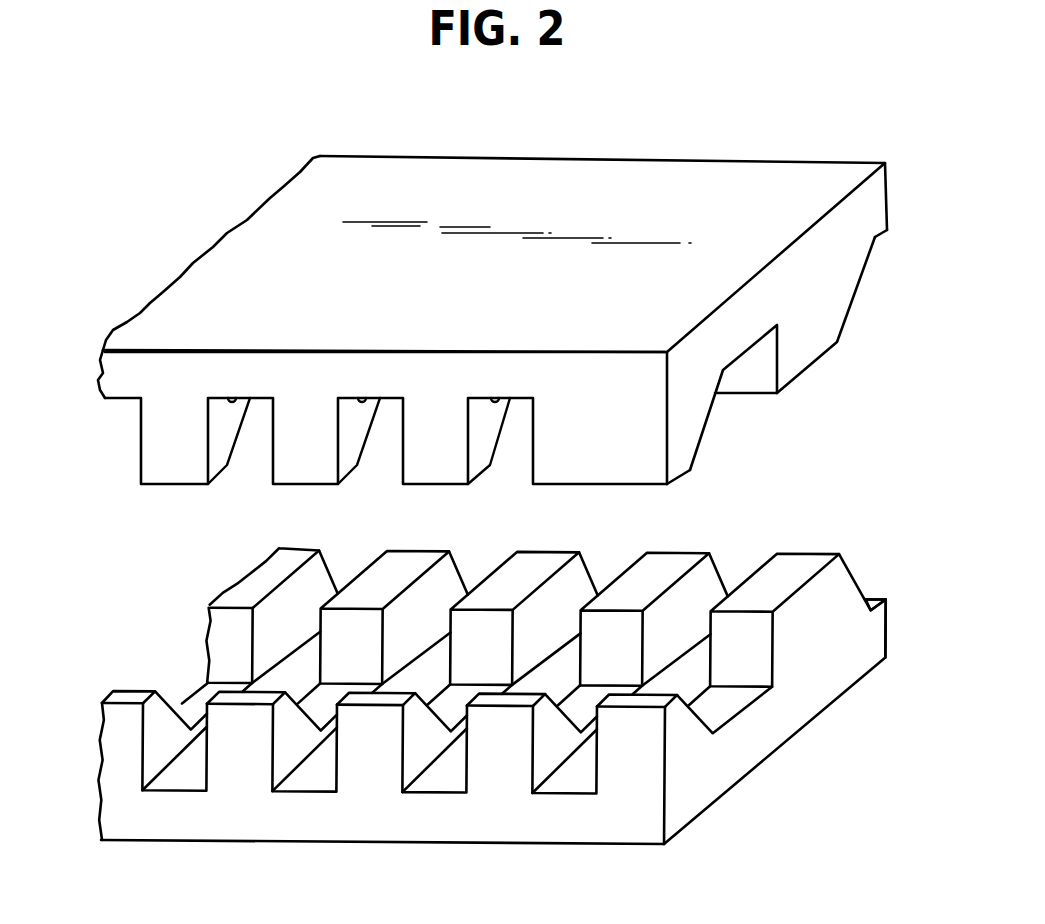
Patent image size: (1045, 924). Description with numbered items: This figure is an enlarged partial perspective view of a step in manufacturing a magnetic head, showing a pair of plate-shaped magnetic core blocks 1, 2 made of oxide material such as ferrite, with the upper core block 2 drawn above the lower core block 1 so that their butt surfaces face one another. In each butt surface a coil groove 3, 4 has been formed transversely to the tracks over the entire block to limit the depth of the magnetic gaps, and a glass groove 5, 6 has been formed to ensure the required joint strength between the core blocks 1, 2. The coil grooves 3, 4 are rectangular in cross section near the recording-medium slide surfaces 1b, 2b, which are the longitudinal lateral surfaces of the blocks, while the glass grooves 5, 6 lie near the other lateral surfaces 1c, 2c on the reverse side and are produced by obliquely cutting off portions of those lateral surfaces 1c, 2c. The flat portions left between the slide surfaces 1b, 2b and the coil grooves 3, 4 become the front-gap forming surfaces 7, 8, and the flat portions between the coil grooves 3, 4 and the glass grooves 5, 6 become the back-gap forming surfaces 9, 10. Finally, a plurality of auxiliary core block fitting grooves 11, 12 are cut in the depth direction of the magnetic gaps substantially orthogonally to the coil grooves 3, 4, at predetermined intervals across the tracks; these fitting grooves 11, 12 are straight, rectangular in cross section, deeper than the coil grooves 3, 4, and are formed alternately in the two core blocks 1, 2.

The magnetic core block 1 is at (800, 712).
The recording-medium slide surface 1b is at (640, 822).
The other lateral surface 1c is at (885, 630).
The magnetic core block 2 is at (112, 398).
The recording-medium slide surface 2b is at (619, 385).
The other lateral surface 2c is at (888, 190).
The coil groove 3 is at (723, 718).
The coil groove 4 is at (740, 357).
The glass groove 5 is at (870, 598).
The glass groove 6 is at (888, 232).
The front-gap forming surface 7 is at (663, 705).
The front-gap forming surface 8 is at (672, 480).
The back-gap forming surface 9 is at (792, 570).
The back-gap forming surface 10 is at (818, 363).
The auxiliary core block fitting groove 11 is at (185, 780).
The auxiliary core block fitting groove 12 is at (240, 400).